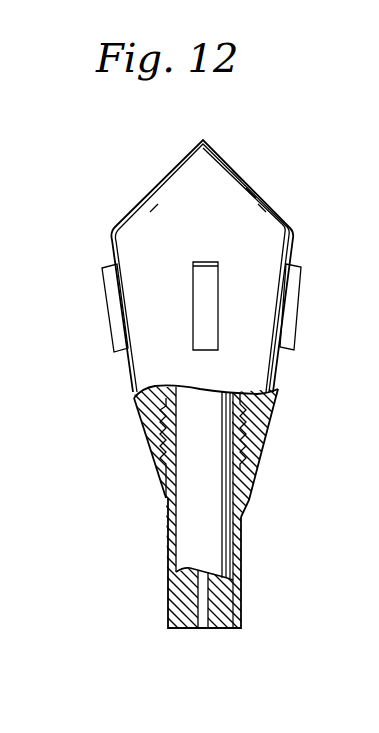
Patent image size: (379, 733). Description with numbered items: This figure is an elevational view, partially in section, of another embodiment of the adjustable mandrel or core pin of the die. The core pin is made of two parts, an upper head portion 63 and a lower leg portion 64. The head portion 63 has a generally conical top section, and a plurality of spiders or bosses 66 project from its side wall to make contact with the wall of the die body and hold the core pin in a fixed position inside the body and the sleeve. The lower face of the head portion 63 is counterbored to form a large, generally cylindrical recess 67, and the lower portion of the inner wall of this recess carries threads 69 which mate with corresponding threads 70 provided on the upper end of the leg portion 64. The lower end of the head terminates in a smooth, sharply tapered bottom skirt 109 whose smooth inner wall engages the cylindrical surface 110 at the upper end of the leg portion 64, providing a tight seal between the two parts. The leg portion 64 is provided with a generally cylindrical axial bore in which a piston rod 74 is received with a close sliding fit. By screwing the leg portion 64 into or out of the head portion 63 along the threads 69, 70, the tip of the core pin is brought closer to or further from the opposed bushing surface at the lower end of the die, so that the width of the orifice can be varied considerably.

The upper head portion 63 is at (131, 373).
The spiders or bosses 66 is at (205, 308).
The cylindrical recess 67 is at (273, 398).
The threads 69 is at (263, 430).
The threads 70 is at (167, 432).
The bottom skirt 109 is at (163, 493).
The cylindrical surface 110 is at (250, 498).
The lower leg portion 64 is at (243, 513).
The piston rod 74 is at (220, 622).